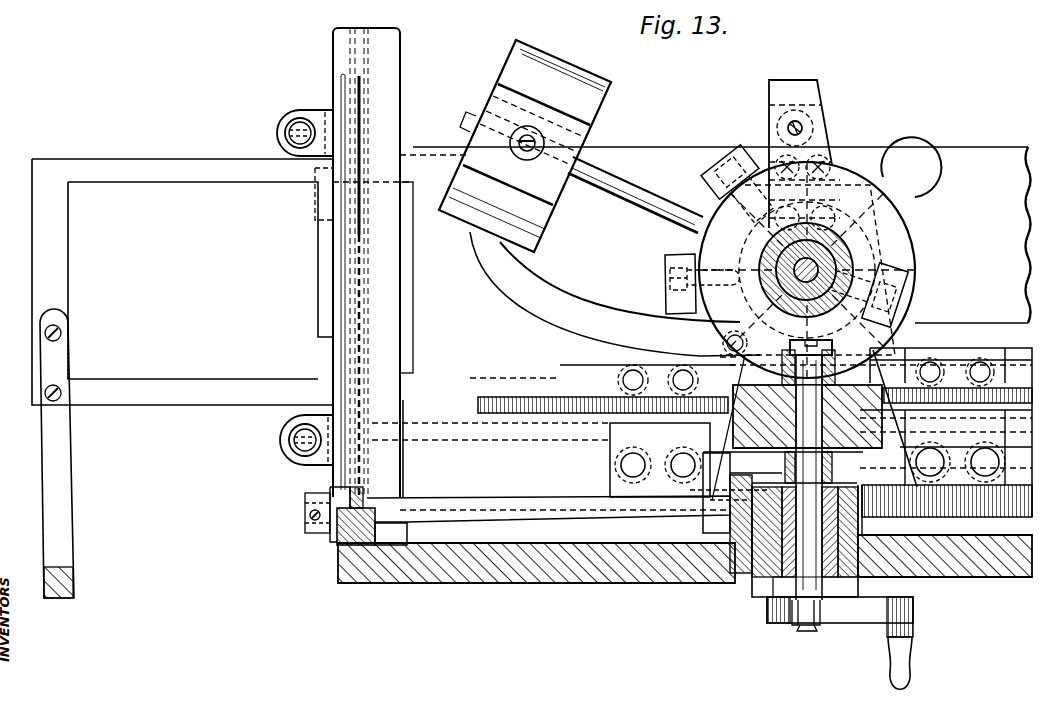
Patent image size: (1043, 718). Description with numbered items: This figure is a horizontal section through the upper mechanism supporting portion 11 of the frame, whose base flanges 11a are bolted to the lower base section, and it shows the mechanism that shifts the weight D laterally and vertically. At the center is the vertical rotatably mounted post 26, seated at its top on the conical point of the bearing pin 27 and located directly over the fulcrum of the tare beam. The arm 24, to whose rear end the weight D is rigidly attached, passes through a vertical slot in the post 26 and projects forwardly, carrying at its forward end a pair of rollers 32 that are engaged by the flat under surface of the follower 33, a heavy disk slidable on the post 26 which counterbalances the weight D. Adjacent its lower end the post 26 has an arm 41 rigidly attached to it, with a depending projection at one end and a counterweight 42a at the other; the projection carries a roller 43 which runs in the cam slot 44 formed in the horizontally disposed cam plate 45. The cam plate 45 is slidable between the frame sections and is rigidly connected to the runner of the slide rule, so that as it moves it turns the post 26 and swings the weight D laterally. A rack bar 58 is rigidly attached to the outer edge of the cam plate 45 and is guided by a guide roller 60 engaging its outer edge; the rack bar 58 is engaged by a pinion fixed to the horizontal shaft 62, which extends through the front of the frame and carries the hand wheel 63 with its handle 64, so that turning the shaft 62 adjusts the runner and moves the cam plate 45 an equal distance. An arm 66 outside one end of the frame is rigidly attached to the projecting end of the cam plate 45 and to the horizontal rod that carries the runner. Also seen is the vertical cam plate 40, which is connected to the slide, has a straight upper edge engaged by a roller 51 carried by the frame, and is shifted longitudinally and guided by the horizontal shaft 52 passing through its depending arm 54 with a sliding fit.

The upper mechanism supporting portion of the frame 11 is at (517, 583).
The base flanges 11a is at (333, 85).
The shiftable weight D is at (605, 97).
The arm 24 is at (621, 182).
The post 26 is at (865, 258).
The bearing pin 27 is at (747, 265).
The rollers 32 is at (890, 353).
The follower 33 is at (916, 257).
The cam plate 40 is at (975, 452).
The arm 41 is at (804, 236).
The counterweight 42a is at (915, 142).
The roller 43 is at (722, 344).
The cam slot 44 is at (535, 320).
The cam plate 45 is at (722, 235).
The roller 51 is at (835, 462).
The shaft 52 is at (530, 498).
The depending arm 54 is at (700, 520).
The rack bar 58 is at (520, 427).
The guide roller 60 is at (812, 128).
The shaft 62 is at (840, 623).
The hand wheel 63 is at (862, 624).
The handle 64 is at (884, 667).
The arm 66 is at (65, 480).